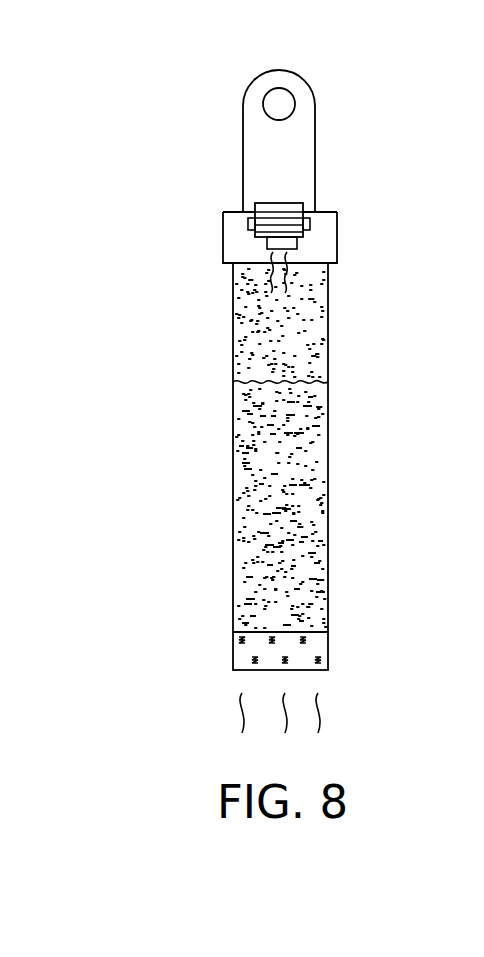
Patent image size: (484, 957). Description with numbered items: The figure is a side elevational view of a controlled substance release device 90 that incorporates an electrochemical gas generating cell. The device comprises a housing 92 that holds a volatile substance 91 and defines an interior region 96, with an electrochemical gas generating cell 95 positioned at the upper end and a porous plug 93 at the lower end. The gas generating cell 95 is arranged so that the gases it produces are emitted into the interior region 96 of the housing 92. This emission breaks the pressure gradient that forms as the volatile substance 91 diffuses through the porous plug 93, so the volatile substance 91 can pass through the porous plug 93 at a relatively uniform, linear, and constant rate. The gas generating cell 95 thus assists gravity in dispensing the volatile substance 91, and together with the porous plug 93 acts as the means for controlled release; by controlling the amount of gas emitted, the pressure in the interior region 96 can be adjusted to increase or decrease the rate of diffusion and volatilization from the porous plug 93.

The controlled substance release device 90 is at (168, 122).
The volatile substance 91 is at (238, 500).
The housing 92 is at (330, 416).
The porous plug 93 is at (315, 657).
The electrochemical gas generating cell 95 is at (280, 224).
The interior region of housing 96 is at (262, 320).